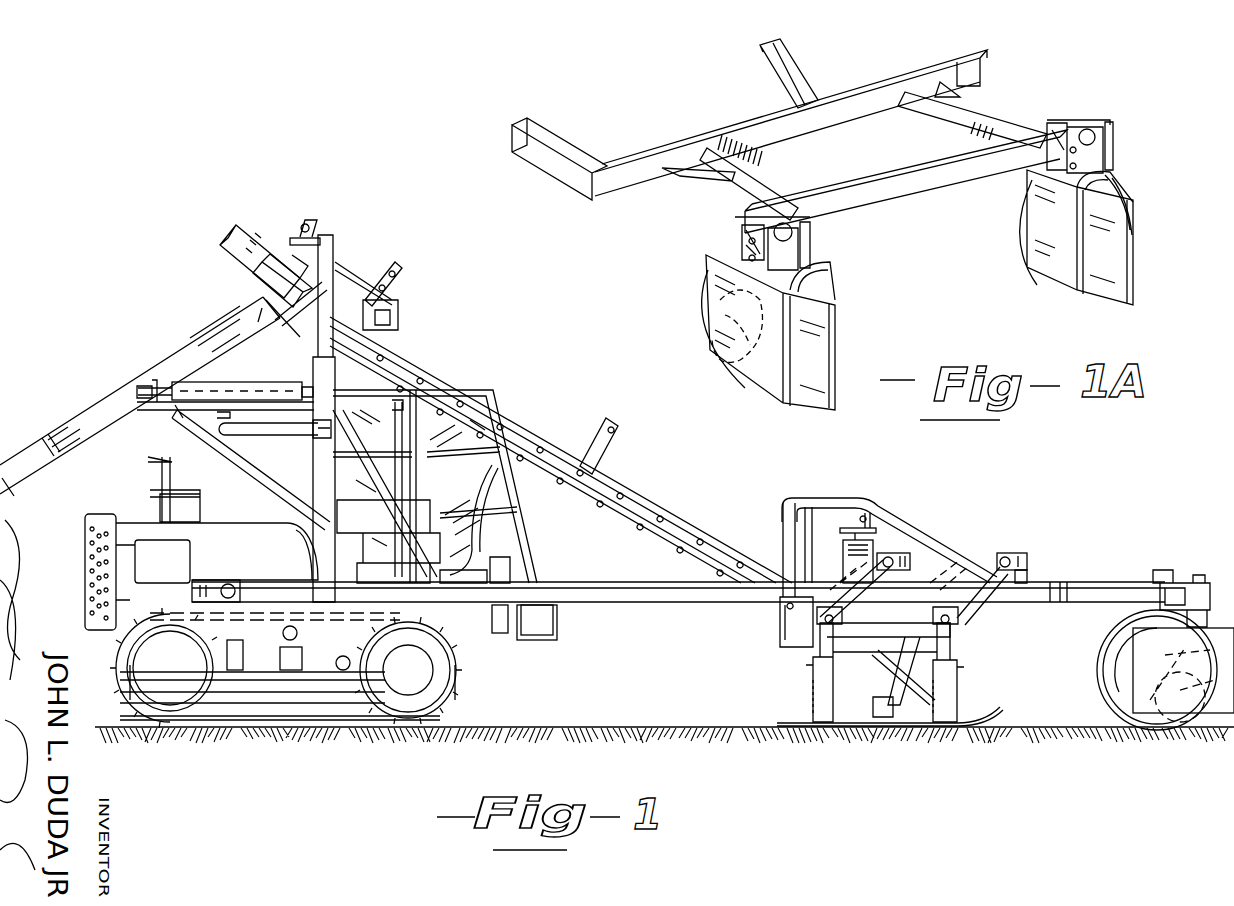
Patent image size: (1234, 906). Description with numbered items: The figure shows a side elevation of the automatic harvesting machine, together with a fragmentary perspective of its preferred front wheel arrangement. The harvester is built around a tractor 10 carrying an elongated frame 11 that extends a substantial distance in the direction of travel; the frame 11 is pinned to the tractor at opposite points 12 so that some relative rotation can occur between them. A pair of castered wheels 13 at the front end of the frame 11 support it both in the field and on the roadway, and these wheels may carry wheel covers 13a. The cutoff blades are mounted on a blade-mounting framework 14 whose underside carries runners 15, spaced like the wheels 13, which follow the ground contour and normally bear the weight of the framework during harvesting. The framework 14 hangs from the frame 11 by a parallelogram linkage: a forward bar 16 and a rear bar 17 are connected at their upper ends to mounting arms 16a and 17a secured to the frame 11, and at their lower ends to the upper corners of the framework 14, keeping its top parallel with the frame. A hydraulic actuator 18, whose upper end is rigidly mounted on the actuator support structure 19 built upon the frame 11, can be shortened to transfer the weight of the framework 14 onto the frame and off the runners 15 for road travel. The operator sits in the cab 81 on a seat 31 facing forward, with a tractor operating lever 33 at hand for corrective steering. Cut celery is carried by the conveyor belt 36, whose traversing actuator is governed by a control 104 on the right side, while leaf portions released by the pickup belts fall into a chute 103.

In FIG. 1, the tractor 10 is at (100, 506).
In FIG. 1, the frame 11 is at (673, 595).
In FIG. 1, the points 12 is at (233, 580).
In FIG. 1, the castered wheels 13 is at (1100, 648).
In FIG. 1A, the castered wheels 13 is at (743, 378).
In FIG. 1, the wheel covers 13a is at (1226, 628).
In FIG. 1A, the wheel covers 13a is at (1135, 232).
In FIG. 1, the blade-mounting framework 14 is at (813, 684).
In FIG. 1, the runners 15 is at (786, 723).
In FIG. 1, the forward bar 16 is at (985, 577).
In FIG. 1, the mounting arm 16a is at (1023, 557).
In FIG. 1, the rear bar 17 is at (872, 560).
In FIG. 1, the mounting arm 17a is at (900, 556).
In FIG. 1, the actuator 18 is at (782, 545).
In FIG. 1, the actuator support structure 19 is at (866, 496).
In FIG. 1, the seat 31 is at (305, 507).
In FIG. 1, the tractor operating lever 33 is at (487, 474).
In FIG. 1, the conveyor belt 36 is at (282, 382).
In FIG. 1, the cab 81 is at (500, 392).
In FIG. 1, the chute 103 is at (97, 417).
In FIG. 1, the control 104 is at (322, 436).